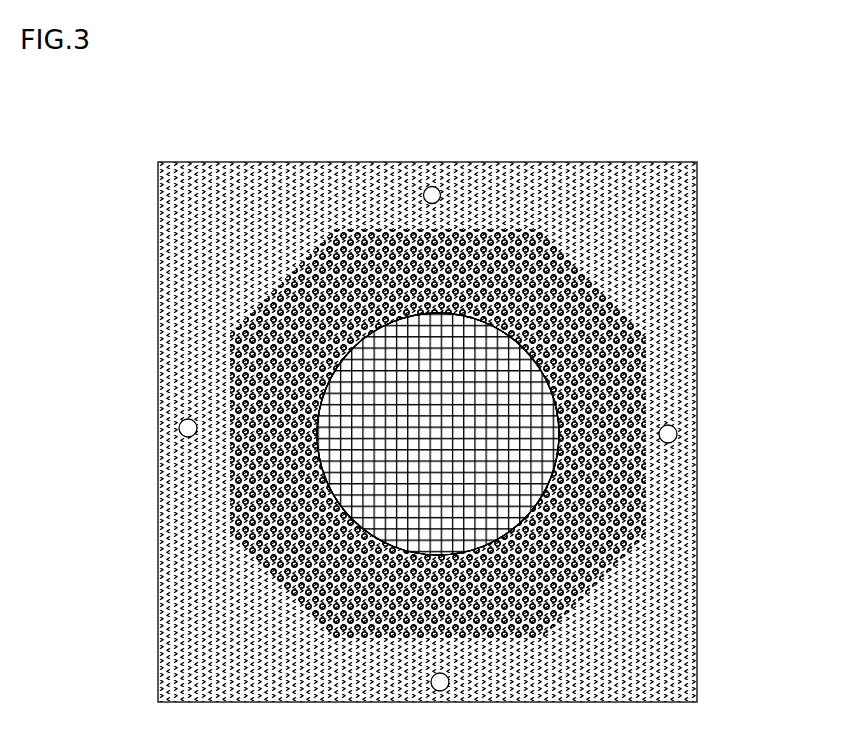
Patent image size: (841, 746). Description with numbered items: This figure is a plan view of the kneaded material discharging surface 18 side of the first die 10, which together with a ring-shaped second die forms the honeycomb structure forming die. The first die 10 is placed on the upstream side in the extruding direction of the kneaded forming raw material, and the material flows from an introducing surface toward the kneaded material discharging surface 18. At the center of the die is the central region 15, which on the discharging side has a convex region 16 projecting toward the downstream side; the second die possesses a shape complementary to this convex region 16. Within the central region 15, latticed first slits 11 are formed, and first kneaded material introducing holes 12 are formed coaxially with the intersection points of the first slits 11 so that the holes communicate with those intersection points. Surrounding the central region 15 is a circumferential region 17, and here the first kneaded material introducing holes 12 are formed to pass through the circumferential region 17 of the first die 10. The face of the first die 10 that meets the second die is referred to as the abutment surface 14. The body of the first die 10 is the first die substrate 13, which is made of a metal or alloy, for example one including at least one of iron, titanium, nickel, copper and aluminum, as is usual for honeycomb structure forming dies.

The first die 10 is at (711, 76).
The first slits 11 is at (542, 490).
The first kneaded material introducing holes 12 is at (477, 298).
The first die substrate 13 is at (645, 278).
The abutment surface 14 is at (332, 300).
The central region 15 is at (372, 372).
The convex region 16 is at (515, 377).
The circumferential region 17 is at (256, 381).
The kneaded material discharging surface 18 is at (430, 335).